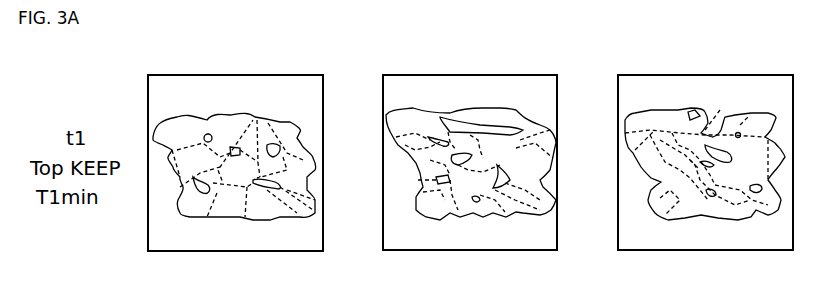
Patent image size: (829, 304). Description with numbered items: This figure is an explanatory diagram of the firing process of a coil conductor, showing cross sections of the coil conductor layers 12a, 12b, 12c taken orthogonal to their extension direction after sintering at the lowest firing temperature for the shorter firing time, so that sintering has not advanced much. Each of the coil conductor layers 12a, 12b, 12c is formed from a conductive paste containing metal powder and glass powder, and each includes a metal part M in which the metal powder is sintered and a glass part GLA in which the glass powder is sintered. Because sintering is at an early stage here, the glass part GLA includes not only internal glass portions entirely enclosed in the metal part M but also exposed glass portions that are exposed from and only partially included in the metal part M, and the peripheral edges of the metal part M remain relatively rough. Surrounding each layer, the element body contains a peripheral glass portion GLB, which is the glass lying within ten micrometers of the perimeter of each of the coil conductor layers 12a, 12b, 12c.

The metal part M is at (182, 122).
The coil conductor layer 12a is at (230, 116).
The coil conductor layer 12b is at (467, 117).
The coil conductor layer 12c is at (657, 118).
The glass part GLA is at (198, 195).
The peripheral glass portion GLB is at (297, 93).